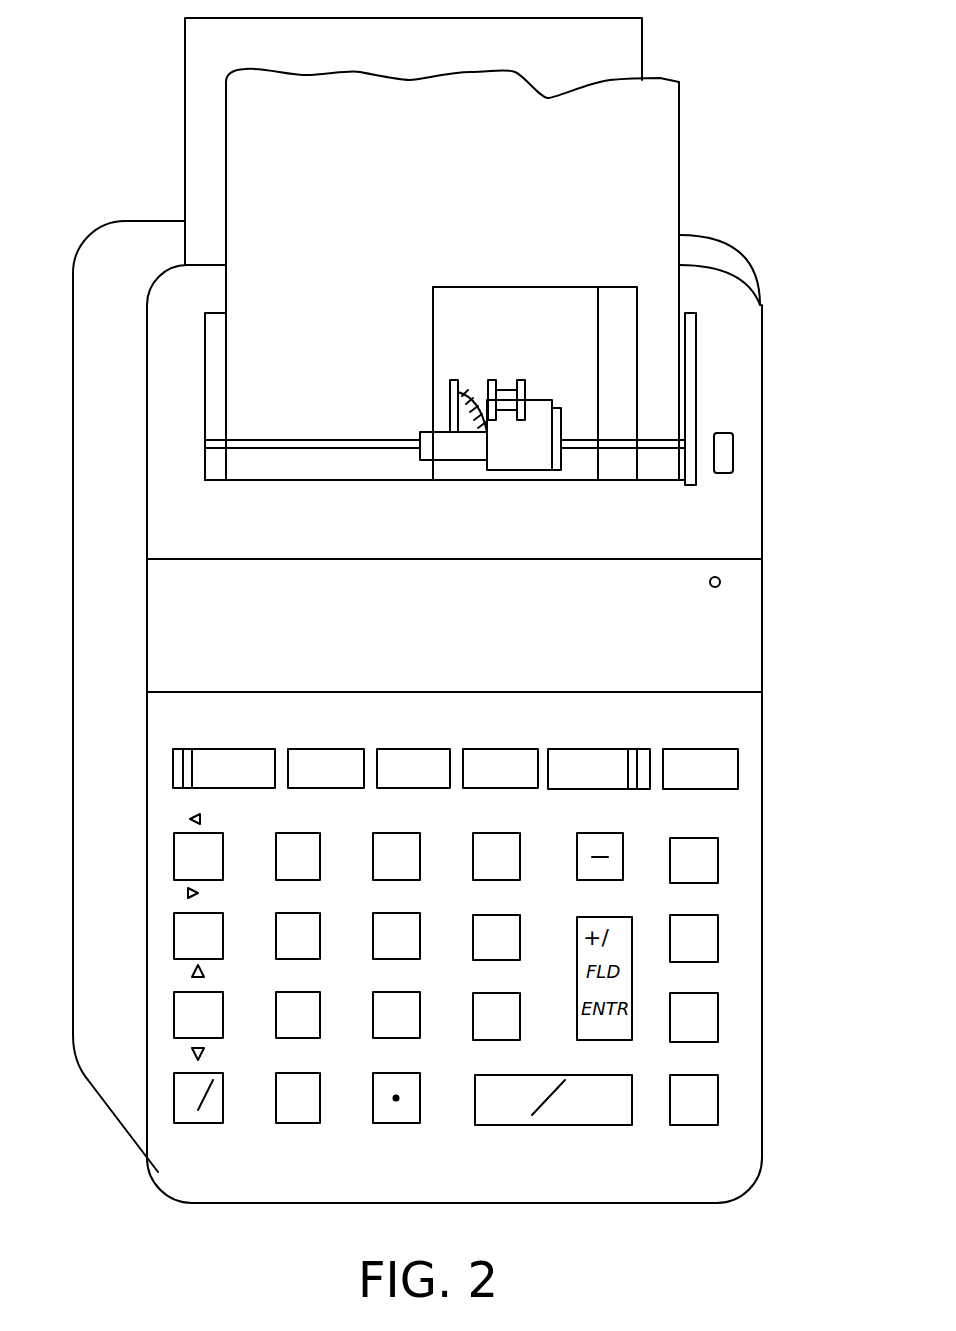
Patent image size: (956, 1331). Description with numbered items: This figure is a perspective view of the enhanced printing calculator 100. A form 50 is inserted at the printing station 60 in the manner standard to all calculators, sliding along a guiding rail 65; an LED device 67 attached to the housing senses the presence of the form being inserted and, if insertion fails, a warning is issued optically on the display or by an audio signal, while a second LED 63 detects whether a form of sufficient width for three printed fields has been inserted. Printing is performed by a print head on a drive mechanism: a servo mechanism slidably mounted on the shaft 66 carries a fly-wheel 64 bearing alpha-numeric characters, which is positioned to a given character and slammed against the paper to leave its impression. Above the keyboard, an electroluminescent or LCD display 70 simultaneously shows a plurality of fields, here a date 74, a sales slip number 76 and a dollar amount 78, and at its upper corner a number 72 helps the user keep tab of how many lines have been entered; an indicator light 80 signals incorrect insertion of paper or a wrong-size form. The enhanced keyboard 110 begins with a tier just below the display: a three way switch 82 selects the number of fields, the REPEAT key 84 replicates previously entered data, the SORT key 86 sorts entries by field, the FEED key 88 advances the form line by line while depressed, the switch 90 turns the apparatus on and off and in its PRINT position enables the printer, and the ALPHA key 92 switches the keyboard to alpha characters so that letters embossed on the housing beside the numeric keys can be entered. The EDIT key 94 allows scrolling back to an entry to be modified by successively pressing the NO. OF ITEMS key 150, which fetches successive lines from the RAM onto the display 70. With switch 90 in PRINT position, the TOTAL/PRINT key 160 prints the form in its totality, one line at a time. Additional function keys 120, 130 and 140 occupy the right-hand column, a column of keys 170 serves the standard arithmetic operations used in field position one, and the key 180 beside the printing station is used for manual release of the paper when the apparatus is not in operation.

The form 50 is at (673, 156).
The printing station 60 is at (212, 358).
The second LED 63 is at (240, 478).
The fly-wheel 64 is at (495, 380).
The guiding rail 65 is at (690, 332).
The shaft 66 is at (322, 444).
The LED device 67 is at (662, 480).
The display 70 is at (495, 618).
The number 72 is at (232, 592).
The date 74 is at (272, 631).
The sales slip number 76 is at (428, 632).
The dollar amount 78 is at (573, 633).
The indicator light 80 is at (720, 582).
The three way switch 82 is at (250, 721).
The REPEAT key 84 is at (320, 750).
The SORT key 86 is at (398, 749).
The FEED key 88 is at (490, 750).
The ON/OFF switch 90 is at (608, 728).
The ALPHA key 92 is at (708, 749).
The EDIT key 94 is at (623, 848).
The calculator housing 100 is at (78, 697).
The enhanced keyboard 110 is at (373, 935).
The header key 120 is at (718, 852).
The account key 130 is at (718, 936).
The date key 140 is at (718, 1023).
The NO. OF ITEMS key 150 is at (718, 1093).
The total/print key 160 is at (555, 1125).
The arithmetic operator keys 170 is at (174, 1085).
The paper release key 180 is at (733, 453).